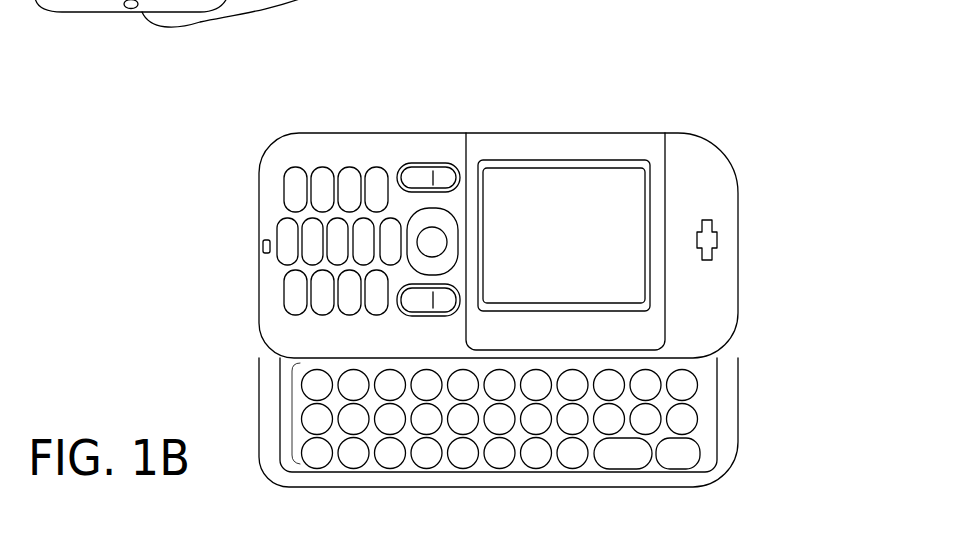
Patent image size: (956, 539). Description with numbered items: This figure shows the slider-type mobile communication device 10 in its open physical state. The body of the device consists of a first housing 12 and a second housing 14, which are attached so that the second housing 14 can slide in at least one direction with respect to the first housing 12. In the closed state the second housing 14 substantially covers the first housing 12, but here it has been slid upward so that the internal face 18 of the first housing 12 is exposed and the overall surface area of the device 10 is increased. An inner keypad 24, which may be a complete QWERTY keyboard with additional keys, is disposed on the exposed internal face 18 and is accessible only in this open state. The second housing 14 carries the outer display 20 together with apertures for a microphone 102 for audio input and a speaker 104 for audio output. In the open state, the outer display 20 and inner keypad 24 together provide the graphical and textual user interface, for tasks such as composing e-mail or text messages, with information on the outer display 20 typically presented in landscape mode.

The slider-type mobile communication device 10 is at (451, 252).
The first housing 12 is at (268, 476).
The second housing 14 is at (362, 145).
The internal face 18 is at (267, 360).
The outer display 20 is at (575, 185).
The inner keypad 24 is at (293, 412).
The microphone 102 is at (262, 249).
The speaker 104 is at (712, 227).